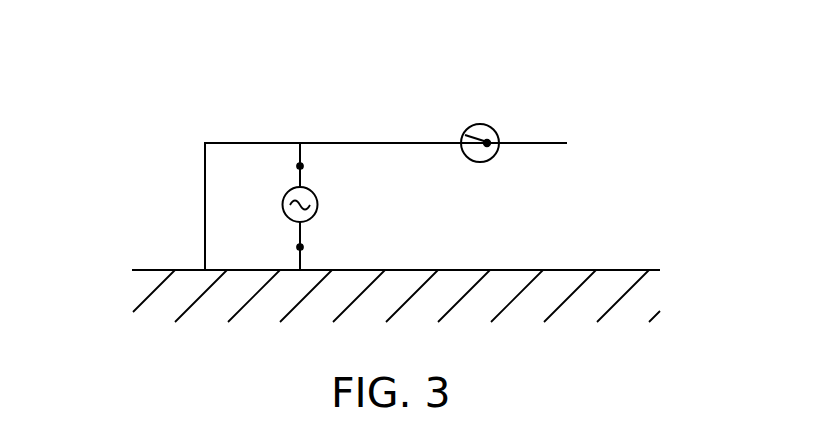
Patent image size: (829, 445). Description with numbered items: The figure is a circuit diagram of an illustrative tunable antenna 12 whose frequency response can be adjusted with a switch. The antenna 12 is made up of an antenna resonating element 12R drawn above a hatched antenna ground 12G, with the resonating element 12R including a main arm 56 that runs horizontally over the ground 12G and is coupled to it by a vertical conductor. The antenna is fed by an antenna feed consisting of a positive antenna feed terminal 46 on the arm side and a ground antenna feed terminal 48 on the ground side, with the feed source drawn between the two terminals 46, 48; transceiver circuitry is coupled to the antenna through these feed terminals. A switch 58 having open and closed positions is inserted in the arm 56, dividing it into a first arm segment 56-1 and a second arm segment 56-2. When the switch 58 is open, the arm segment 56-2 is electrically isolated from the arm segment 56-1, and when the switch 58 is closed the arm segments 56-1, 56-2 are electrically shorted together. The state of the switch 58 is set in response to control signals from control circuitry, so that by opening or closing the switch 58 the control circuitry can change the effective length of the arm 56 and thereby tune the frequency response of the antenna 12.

The antenna 12 is at (713, 143).
The antenna resonating element 12R is at (107, 142).
The antenna ground 12G is at (107, 272).
The positive antenna feed terminal 46 is at (303, 166).
The ground antenna feed terminal 48 is at (303, 247).
The main arm 56 is at (573, 83).
The arm segment 56-1 is at (348, 143).
The arm segment 56-2 is at (530, 143).
The switch 58 is at (480, 162).